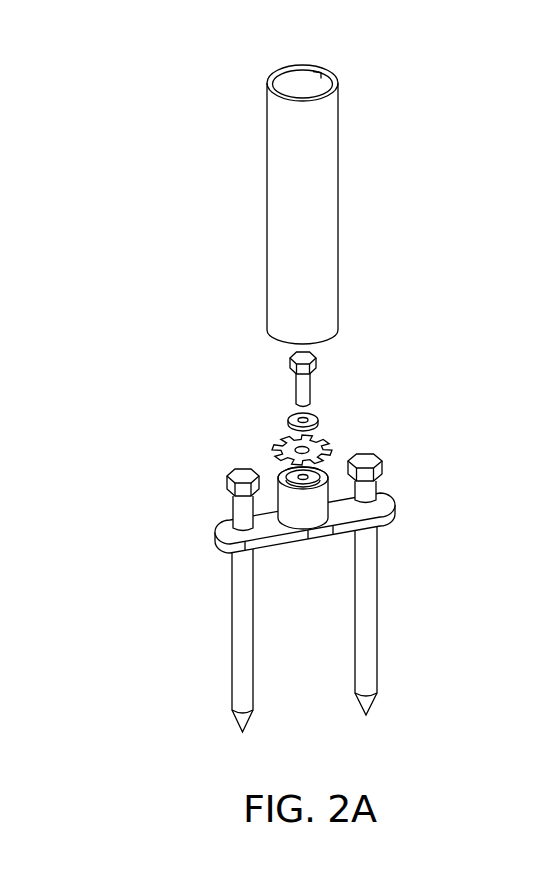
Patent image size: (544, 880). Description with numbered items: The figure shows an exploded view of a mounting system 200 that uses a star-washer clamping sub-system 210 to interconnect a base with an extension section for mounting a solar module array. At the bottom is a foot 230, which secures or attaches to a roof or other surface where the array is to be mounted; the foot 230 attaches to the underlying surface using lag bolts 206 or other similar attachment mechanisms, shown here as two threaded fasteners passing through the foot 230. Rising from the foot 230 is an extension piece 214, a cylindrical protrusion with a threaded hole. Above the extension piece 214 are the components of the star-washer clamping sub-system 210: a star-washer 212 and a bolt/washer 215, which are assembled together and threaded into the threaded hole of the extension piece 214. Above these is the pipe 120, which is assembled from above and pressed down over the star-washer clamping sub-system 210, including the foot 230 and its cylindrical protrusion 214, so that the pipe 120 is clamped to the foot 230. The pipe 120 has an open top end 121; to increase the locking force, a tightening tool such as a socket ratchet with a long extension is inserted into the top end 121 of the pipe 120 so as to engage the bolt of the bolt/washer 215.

The mounting system 200 is at (203, 196).
The pipe 120 is at (336, 196).
The top end 121 is at (322, 75).
The star-washer clamping sub-system 210 is at (275, 363).
The bolt/washer 215 is at (325, 370).
The star-washer 212 is at (335, 448).
The extension piece 214 is at (313, 507).
The foot 230 is at (220, 541).
The lag bolts 206 is at (299, 593).